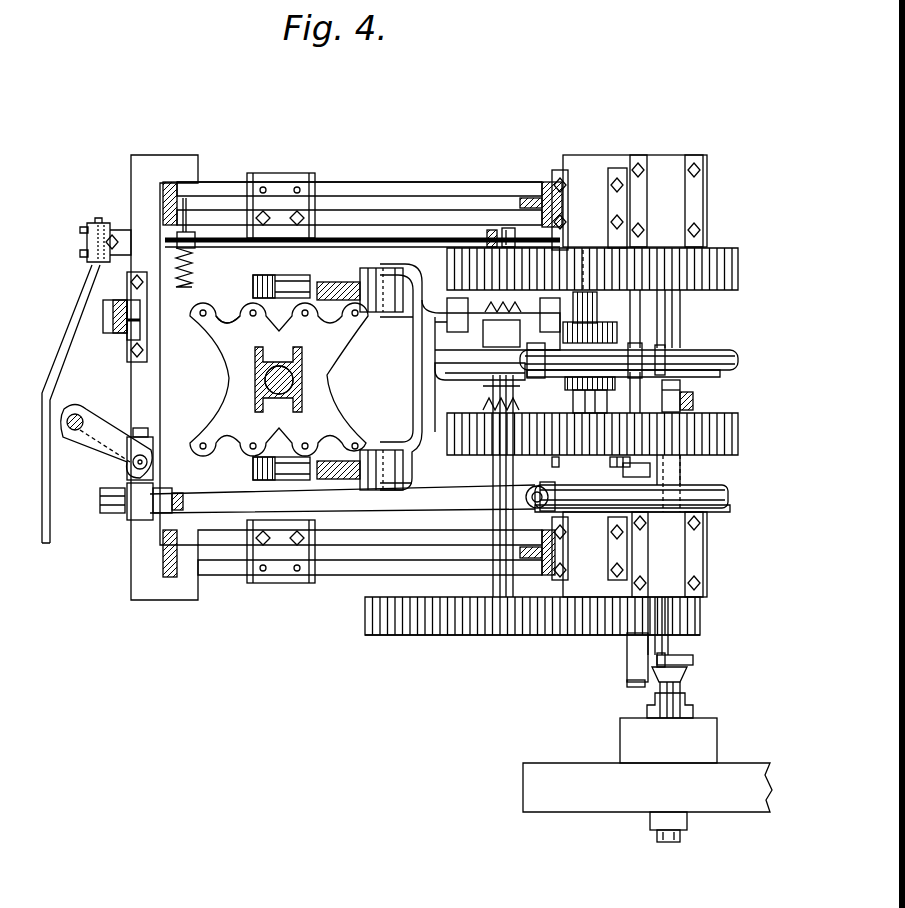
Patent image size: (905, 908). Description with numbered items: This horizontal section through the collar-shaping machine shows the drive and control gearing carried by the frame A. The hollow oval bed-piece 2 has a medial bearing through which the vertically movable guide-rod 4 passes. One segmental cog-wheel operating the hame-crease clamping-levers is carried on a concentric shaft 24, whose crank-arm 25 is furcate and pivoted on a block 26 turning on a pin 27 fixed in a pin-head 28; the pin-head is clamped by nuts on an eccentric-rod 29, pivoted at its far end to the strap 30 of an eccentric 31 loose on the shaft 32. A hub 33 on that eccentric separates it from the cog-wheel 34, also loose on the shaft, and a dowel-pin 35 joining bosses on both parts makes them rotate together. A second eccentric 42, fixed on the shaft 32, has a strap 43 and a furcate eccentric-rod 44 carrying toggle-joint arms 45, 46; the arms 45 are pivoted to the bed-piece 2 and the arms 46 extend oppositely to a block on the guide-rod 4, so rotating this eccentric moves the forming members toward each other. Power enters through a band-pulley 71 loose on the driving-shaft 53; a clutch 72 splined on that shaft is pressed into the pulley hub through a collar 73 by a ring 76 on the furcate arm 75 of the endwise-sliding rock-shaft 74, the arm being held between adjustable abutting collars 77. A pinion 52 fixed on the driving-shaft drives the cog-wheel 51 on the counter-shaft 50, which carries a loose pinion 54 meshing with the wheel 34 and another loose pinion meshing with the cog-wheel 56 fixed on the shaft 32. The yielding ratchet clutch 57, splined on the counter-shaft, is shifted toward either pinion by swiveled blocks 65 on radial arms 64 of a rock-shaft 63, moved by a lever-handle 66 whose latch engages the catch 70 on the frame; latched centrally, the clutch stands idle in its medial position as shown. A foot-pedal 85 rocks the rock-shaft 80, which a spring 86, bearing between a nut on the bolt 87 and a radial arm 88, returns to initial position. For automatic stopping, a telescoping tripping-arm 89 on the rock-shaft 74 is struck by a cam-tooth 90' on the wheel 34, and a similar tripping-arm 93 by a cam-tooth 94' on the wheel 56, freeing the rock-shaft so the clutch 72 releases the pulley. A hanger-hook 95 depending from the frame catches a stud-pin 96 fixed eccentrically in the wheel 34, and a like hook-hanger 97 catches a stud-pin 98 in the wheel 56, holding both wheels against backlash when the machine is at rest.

The frame A is at (358, 180).
The bed-piece 2 is at (318, 387).
The guide-rod 4 is at (262, 390).
The concentric shaft 24 is at (77, 414).
The crank-arm 25 is at (98, 452).
The block 26 is at (153, 450).
The pin 27 is at (149, 431).
The pin-head 28 is at (130, 521).
The eccentric-rod 29 is at (354, 509).
The strap 30 is at (718, 511).
The eccentric 31 is at (724, 486).
The shaft 32 is at (598, 410).
The hub 33 is at (621, 474).
The cog-wheel 34 is at (739, 436).
The dowel-pin 35 is at (690, 463).
The eccentric 42 is at (720, 349).
The strap 43 is at (720, 373).
The eccentric-rod 44 is at (462, 372).
The toggle-joint arms 45 is at (334, 301).
The toggle-joint arms 46 is at (302, 276).
The counter-shaft 50 is at (494, 468).
The cog-wheel 51 is at (458, 636).
The pinion 52 is at (701, 612).
The driving-shaft 53 is at (670, 643).
The pinion 54 is at (538, 411).
The cog-wheel 56 is at (739, 273).
The clutch 57 is at (501, 333).
The rock-shaft 63 is at (232, 306).
The radial arms 64 is at (503, 315).
The blocks 65 is at (473, 330).
The lever-handle 66 is at (104, 320).
The catch 70 is at (135, 335).
The band-pulley 71 is at (556, 766).
The clutch 72 is at (695, 717).
The collar 73 is at (688, 678).
The rock-shaft 74 is at (636, 335).
The radial furcate arm 75 is at (628, 662).
The ring 76 is at (694, 660).
The abutting collars 77 is at (636, 688).
The rock-shaft 80 is at (328, 246).
The foot-pedal 85 is at (42, 452).
The spring 86 is at (195, 265).
The bolt 87 is at (196, 218).
The radial arm 88 is at (196, 248).
The tripping-arm 89 is at (609, 462).
The cam-tooth 90' is at (543, 467).
The tripping-arm 93 is at (600, 300).
The cam-tooth 94' is at (586, 258).
The hanger-hook 95 is at (694, 402).
The stud-pin 96 is at (680, 384).
The hook-hanger 97 is at (492, 231).
The stud-pin 98 is at (510, 230).